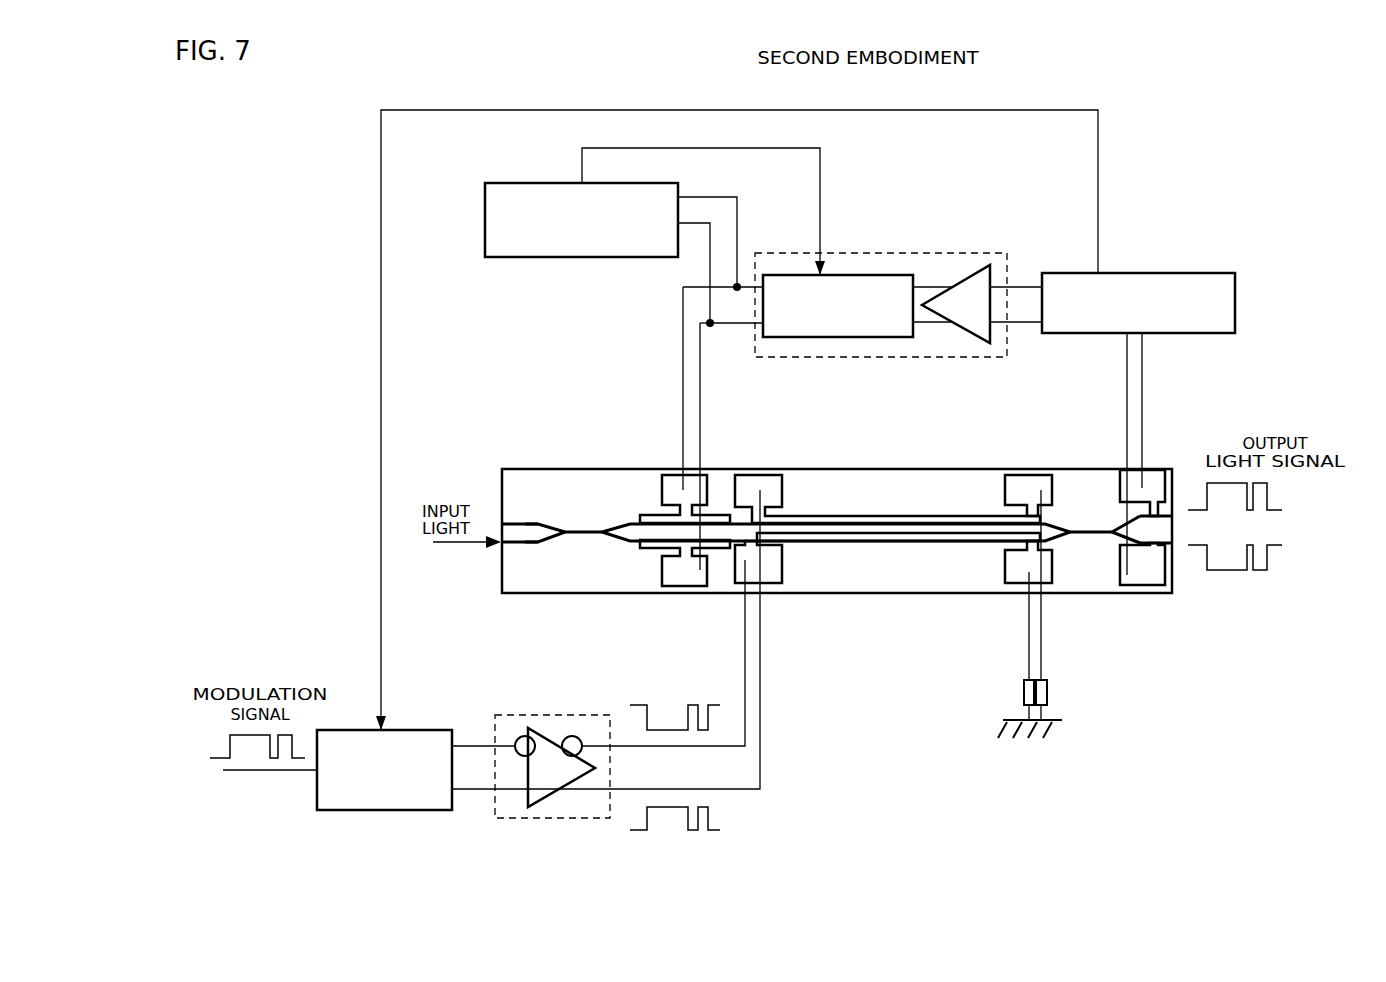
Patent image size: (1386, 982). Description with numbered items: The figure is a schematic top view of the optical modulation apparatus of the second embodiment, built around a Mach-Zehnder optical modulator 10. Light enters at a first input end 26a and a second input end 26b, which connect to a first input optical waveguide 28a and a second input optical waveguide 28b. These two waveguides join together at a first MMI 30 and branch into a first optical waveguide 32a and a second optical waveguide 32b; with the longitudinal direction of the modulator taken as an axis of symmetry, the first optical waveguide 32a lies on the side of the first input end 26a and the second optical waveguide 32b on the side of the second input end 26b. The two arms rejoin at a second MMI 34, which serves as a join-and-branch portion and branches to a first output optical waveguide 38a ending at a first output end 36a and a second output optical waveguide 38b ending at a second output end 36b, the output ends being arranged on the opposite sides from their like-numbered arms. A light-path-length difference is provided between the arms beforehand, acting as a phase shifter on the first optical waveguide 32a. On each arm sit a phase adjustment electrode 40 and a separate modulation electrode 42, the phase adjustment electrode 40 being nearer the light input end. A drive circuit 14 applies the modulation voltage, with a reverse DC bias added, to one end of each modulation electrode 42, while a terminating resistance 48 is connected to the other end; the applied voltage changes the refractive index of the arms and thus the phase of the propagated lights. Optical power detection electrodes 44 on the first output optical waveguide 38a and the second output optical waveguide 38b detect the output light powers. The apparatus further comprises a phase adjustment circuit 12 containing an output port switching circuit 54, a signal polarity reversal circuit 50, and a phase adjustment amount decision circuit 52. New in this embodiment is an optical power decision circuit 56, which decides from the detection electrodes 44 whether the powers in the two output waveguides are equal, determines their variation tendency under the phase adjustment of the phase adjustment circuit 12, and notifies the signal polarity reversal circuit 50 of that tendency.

The Mach-Zehnder optical modulator 10 is at (941, 596).
The phase adjustment circuit 12 is at (968, 253).
The drive circuit 14 is at (552, 818).
The first input end 26a is at (502, 546).
The second input end 26b is at (502, 522).
The first input optical waveguide 28a is at (520, 546).
The second input optical waveguide 28b is at (526, 518).
The first MMI 30 is at (574, 536).
The first optical waveguide 32a is at (615, 548).
The second optical waveguide 32b is at (614, 518).
The second MMI 34 is at (1078, 530).
The first output end 36a is at (1176, 510).
The second output end 36b is at (1176, 585).
The first output optical waveguide 38a is at (1095, 520).
The second output optical waveguide 38b is at (1090, 545).
The phase adjustment electrode 40 is at (712, 518).
The modulation electrode 42 is at (813, 518).
The optical power detection electrode 44 is at (1116, 495).
The terminating resistance 48 is at (1023, 692).
The signal polarity reversal circuit 50 is at (390, 810).
The phase adjustment amount decision circuit 52 is at (558, 258).
The output port switching circuit 54 is at (876, 275).
The optical power decision circuit 56 is at (1235, 296).